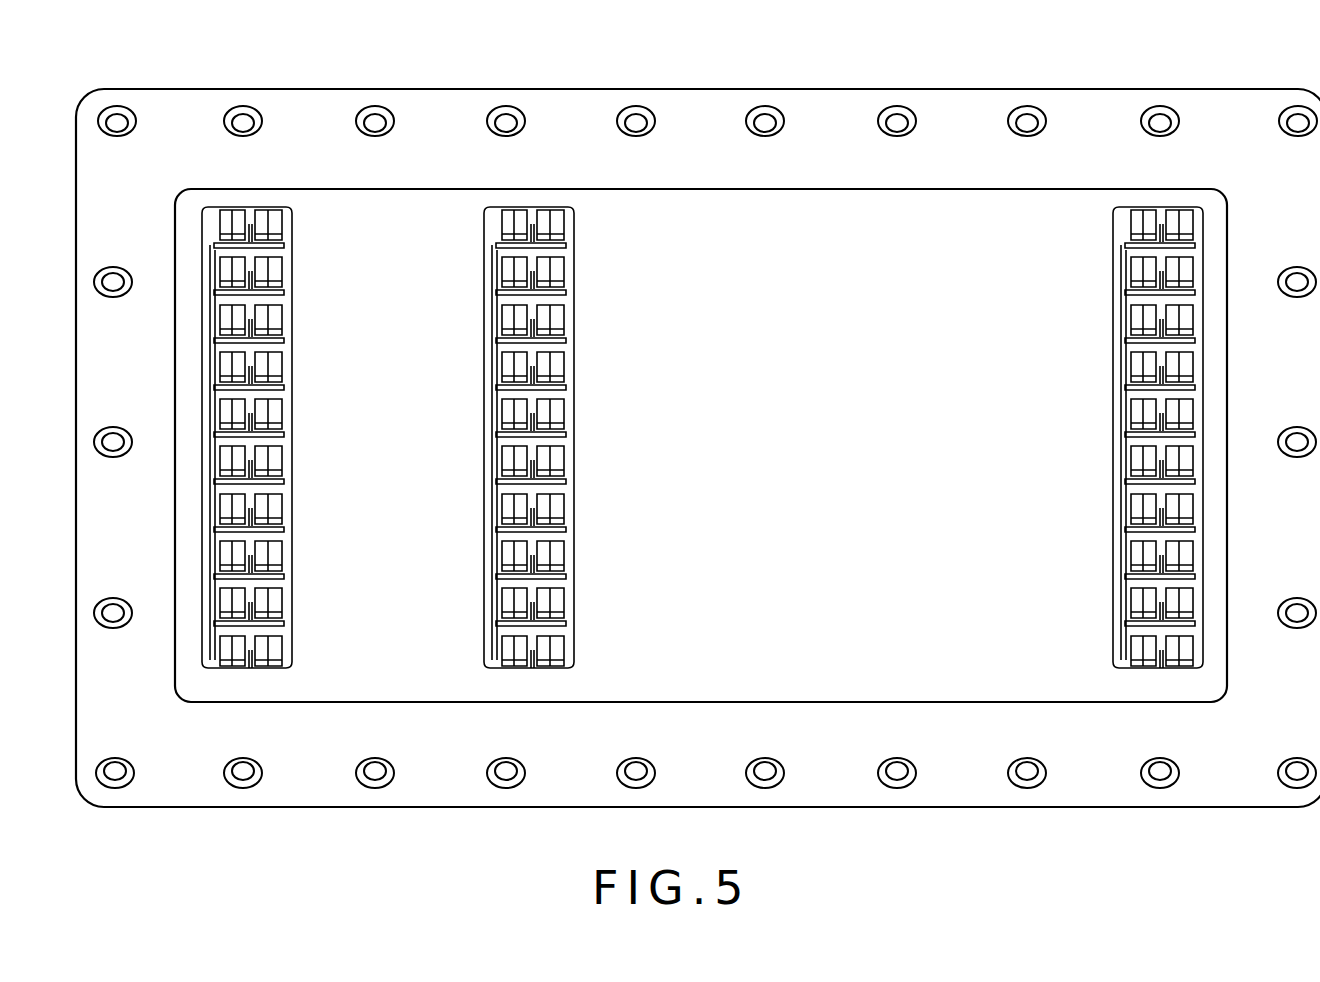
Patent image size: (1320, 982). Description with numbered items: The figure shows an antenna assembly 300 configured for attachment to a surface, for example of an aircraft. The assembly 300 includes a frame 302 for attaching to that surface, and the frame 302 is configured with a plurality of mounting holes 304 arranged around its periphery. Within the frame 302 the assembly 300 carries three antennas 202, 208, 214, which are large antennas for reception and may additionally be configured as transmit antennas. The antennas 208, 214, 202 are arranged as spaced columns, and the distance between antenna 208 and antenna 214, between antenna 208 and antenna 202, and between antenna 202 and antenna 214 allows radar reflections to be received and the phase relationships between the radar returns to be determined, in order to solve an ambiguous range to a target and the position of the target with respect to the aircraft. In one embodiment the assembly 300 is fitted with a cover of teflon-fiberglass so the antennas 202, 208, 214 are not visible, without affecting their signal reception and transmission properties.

The antenna assembly 300 is at (776, 90).
The frame 302 is at (706, 700).
The mounting holes 304 is at (381, 108).
The antenna 208 is at (293, 347).
The antenna 214 is at (575, 322).
The antenna 202 is at (1112, 274).